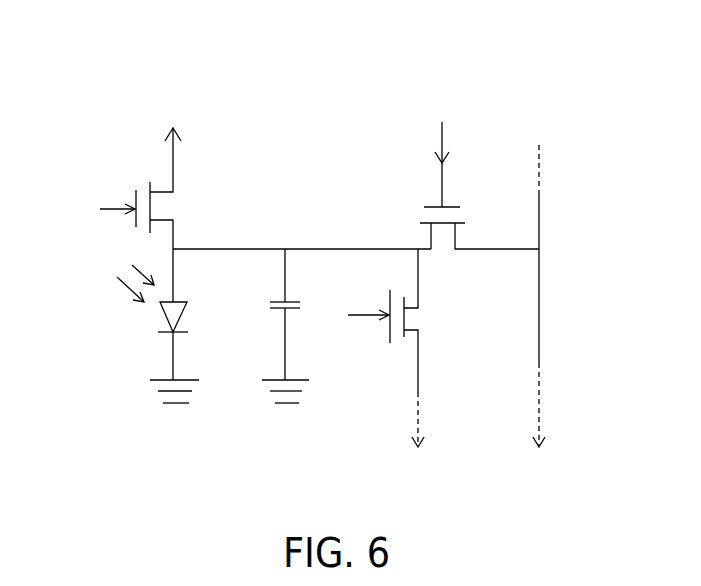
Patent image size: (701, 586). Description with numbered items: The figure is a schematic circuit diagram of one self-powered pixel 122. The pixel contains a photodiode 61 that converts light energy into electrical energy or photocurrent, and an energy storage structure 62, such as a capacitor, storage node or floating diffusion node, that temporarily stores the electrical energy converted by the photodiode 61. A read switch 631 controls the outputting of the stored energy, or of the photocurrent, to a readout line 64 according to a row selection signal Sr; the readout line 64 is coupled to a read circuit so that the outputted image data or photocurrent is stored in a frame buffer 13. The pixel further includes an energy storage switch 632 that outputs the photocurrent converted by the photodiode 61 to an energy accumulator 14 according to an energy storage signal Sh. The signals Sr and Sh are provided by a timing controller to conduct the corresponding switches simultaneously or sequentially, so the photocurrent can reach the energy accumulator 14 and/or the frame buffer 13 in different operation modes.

The self-powered pixel 122 is at (134, 79).
The photodiode 61 is at (162, 317).
The energy storage structure 62 is at (275, 310).
The read switch 631 is at (420, 222).
The energy storage switch 632 is at (388, 335).
The readout line 64 is at (539, 226).
The energy accumulator 14 is at (417, 442).
The frame buffer 13 is at (542, 427).